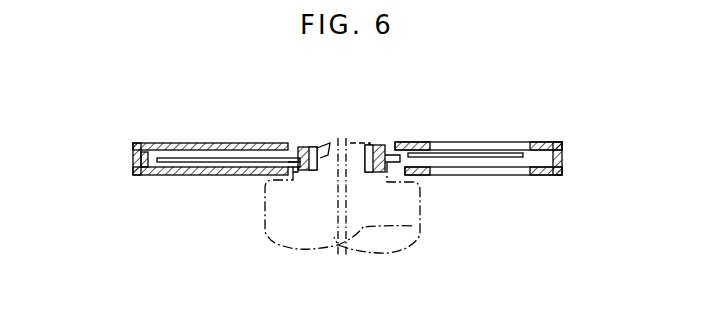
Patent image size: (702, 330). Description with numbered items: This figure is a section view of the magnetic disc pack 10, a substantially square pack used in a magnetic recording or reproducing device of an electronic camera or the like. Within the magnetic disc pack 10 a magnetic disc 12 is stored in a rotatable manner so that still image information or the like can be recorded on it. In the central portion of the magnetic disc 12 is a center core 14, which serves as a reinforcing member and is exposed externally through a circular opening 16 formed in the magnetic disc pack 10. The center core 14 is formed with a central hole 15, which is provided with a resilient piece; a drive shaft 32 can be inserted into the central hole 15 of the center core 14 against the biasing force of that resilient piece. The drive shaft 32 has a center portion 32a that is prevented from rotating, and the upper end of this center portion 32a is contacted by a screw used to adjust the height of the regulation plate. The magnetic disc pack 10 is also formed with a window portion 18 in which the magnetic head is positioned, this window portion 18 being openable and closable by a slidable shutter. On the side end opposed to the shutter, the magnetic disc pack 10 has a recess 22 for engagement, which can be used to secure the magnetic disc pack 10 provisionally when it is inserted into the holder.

The magnetic disc pack 10 is at (179, 137).
The magnetic disc 12 is at (223, 160).
The center core 14 is at (305, 144).
The central hole 15 is at (328, 143).
The circular opening 16 is at (390, 142).
The window portion 18 is at (505, 176).
The recess 22 is at (133, 163).
The drive shaft 32 is at (350, 142).
The center portion of the drive shaft 32a is at (358, 143).